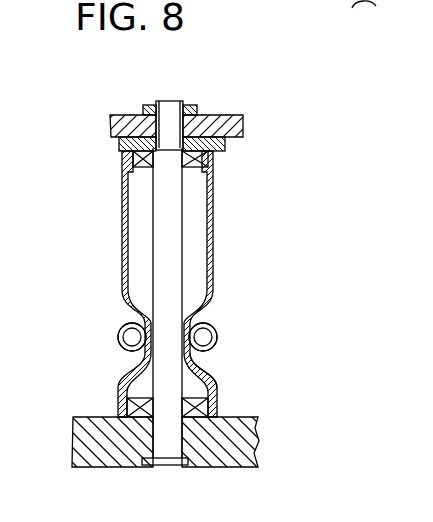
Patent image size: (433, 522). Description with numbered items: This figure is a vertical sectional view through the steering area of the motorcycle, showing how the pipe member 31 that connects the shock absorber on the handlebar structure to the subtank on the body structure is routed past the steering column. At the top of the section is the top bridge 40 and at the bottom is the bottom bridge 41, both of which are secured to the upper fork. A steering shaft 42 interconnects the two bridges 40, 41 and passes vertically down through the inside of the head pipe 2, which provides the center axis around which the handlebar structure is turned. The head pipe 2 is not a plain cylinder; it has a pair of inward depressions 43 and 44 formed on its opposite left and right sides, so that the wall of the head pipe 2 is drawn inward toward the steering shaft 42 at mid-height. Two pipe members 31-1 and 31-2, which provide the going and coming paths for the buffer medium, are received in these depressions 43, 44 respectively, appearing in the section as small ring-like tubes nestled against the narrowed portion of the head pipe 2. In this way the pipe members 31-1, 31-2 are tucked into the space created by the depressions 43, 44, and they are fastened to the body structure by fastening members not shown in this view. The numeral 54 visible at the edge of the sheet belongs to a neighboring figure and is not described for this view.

The head pipe 2 is at (218, 205).
The top bridge 40 is at (243, 130).
The bottom bridge 41 is at (255, 450).
The steering shaft 42 is at (167, 197).
The inward depression 43 is at (203, 362).
The inward depression 44 is at (126, 351).
The pipe member 31 is at (217, 329).
The pipe member 31-1 is at (218, 340).
The pipe member 31-2 is at (119, 332).
The stray numeral from adjacent figure 54 is at (331, 13).